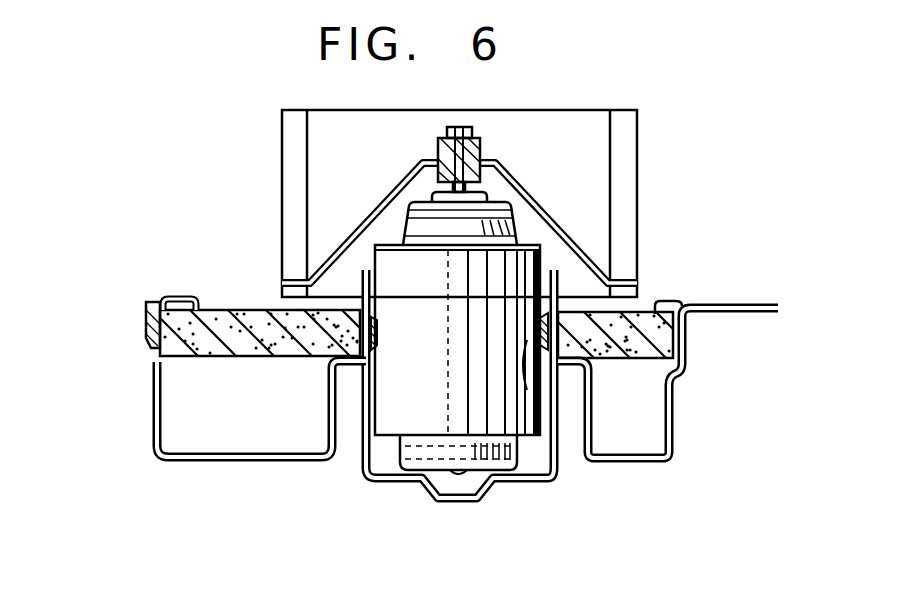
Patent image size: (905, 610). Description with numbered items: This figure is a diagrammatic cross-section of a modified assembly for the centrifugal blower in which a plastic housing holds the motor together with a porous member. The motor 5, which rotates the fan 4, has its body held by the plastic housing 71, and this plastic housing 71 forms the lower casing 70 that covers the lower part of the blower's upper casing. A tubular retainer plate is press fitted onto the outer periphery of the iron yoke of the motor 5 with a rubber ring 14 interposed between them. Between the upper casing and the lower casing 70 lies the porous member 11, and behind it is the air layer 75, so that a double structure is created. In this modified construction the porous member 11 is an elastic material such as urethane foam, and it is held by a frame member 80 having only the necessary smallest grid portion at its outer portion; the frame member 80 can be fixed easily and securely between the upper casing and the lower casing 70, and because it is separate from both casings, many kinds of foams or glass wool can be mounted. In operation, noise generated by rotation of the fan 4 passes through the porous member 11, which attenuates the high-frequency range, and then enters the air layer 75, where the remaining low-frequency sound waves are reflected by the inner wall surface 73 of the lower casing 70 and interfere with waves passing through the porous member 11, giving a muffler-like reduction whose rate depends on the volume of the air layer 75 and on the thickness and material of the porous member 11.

The fan 4 is at (291, 163).
The motor 5 is at (393, 415).
The porous member 11 is at (257, 312).
The rubber ring 14 is at (541, 407).
The lower casing 70 is at (238, 462).
The plastic housing 71 is at (358, 438).
The inner wall surface 73 is at (650, 459).
The air layer 75 is at (180, 413).
The frame member 80 is at (180, 302).